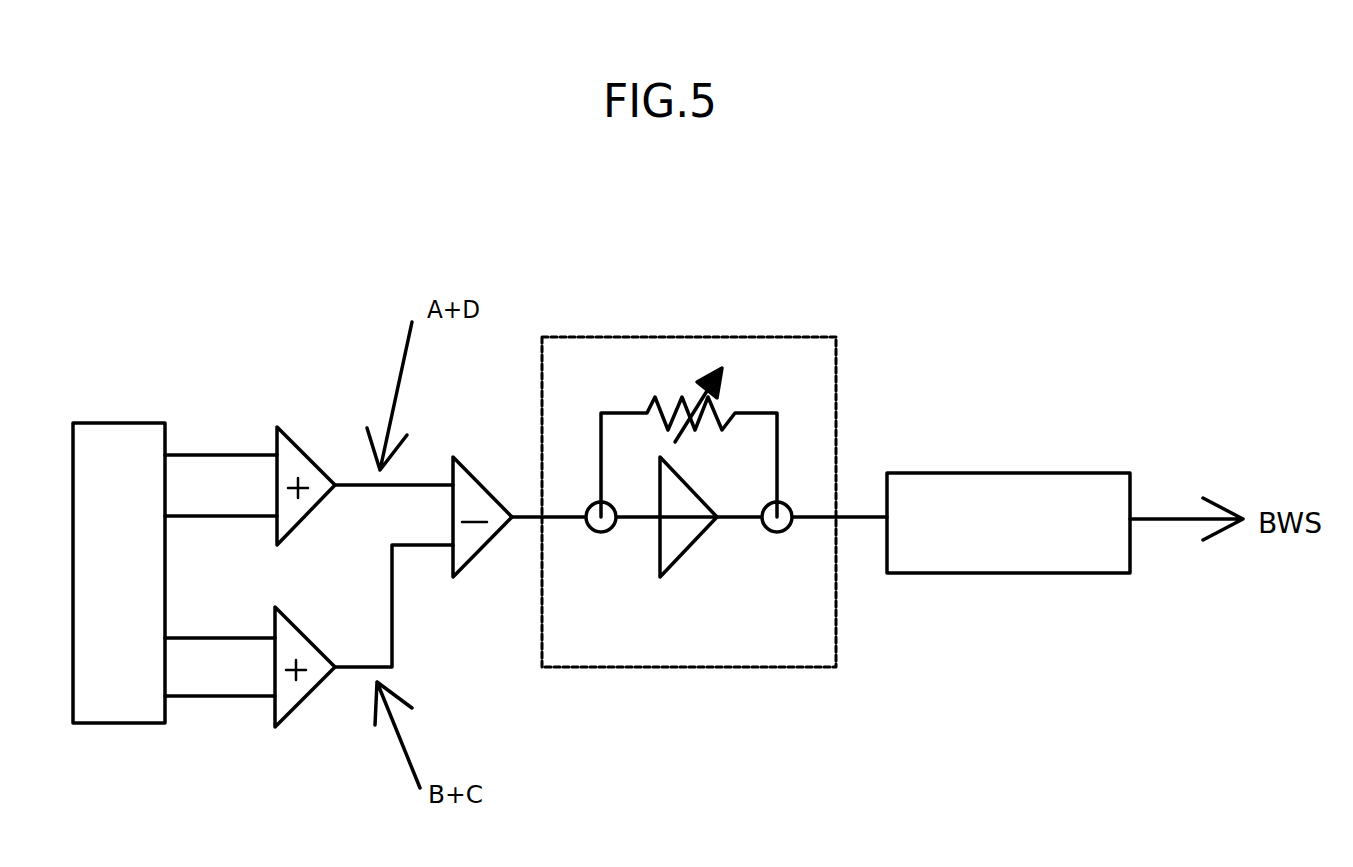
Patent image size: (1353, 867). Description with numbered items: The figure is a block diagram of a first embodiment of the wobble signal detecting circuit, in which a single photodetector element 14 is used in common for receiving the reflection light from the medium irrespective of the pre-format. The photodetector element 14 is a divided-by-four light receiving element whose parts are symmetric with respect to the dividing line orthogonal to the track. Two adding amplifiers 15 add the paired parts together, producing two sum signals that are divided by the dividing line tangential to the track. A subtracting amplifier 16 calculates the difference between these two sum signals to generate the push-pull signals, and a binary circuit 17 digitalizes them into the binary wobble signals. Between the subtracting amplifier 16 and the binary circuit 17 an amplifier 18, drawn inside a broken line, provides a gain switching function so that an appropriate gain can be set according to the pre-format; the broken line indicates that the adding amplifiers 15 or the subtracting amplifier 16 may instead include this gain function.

The photodetector element 14 is at (150, 423).
The adding amplifier 15 is at (289, 441).
The subtracting amplifier 16 is at (456, 461).
The binary circuit 17 is at (985, 575).
The amplifier 18 is at (713, 670).